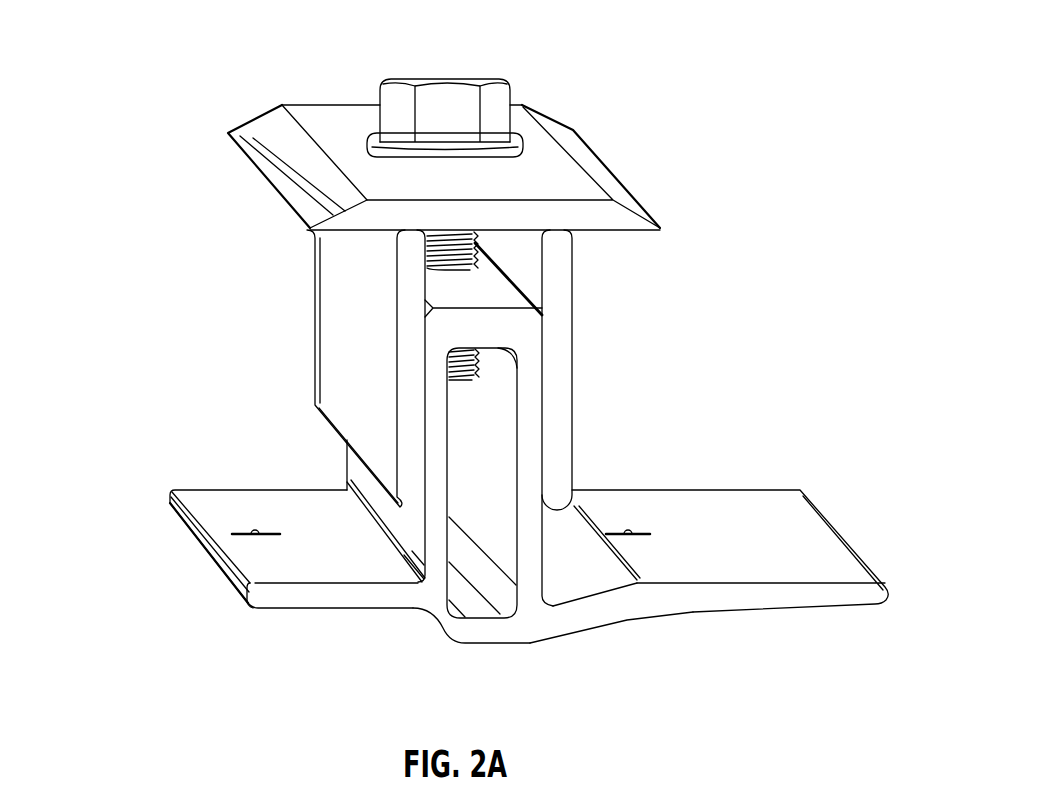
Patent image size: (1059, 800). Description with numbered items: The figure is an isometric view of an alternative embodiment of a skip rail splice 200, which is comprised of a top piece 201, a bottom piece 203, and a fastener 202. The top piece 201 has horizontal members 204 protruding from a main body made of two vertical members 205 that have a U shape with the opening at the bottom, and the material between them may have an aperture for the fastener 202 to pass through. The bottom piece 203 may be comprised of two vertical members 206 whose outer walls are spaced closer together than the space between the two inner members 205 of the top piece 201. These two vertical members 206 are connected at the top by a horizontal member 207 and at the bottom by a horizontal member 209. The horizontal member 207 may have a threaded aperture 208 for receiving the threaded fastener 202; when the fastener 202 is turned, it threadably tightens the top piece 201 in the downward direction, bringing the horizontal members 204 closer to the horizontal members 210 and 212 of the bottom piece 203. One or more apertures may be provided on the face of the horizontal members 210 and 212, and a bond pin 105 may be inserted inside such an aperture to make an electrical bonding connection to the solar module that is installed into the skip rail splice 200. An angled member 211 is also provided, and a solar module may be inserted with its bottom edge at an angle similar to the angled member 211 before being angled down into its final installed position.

The skip rail splice 200 is at (772, 47).
The top piece 201 is at (272, 143).
The fastener 202 is at (490, 108).
The bottom piece 203 is at (493, 300).
The horizontal members 204 is at (343, 236).
The vertical members 205 is at (410, 355).
The vertical members 206 is at (435, 517).
The horizontal member 207 is at (518, 332).
The threaded aperture 208 is at (460, 276).
The horizontal member 209 is at (492, 648).
The horizontal member 210 is at (357, 588).
The angled member 211 is at (587, 600).
The horizontal member 212 is at (780, 597).
The bond pin 105 is at (222, 533).